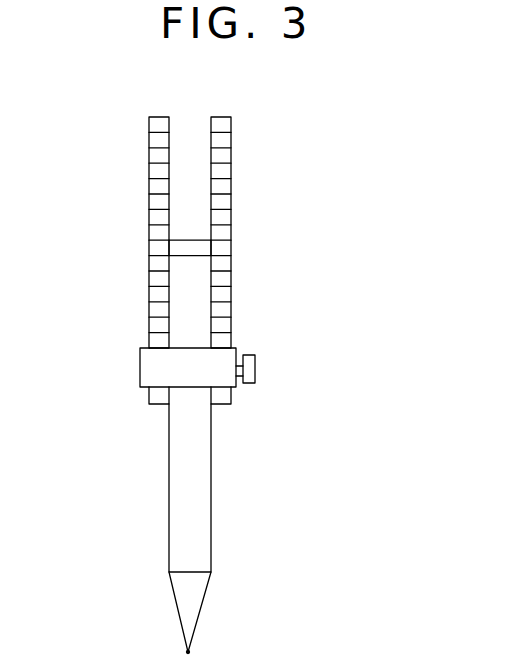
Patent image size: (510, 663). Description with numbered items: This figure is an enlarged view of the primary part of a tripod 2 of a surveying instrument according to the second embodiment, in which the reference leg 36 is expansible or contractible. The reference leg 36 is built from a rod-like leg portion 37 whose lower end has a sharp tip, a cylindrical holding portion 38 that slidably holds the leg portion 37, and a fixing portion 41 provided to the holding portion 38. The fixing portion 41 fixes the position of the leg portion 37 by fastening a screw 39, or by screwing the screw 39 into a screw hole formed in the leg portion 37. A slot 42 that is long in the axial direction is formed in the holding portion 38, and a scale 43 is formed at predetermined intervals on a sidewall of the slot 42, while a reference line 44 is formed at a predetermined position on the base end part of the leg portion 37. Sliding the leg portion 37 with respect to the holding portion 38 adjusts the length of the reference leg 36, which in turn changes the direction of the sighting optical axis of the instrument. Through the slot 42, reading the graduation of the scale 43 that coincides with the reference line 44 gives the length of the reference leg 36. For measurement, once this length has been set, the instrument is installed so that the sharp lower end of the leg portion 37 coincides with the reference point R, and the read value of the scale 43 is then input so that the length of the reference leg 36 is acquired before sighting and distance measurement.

The tripod 2 is at (277, 246).
The reference leg 36 is at (156, 455).
The leg portion 37 is at (212, 470).
The holding portion 38 is at (232, 150).
The screw 39 is at (256, 370).
The fixing portion 41 is at (140, 371).
The slot 42 is at (186, 149).
The scale 43 is at (163, 185).
The reference line 44 is at (199, 258).
The reference point R is at (187, 652).